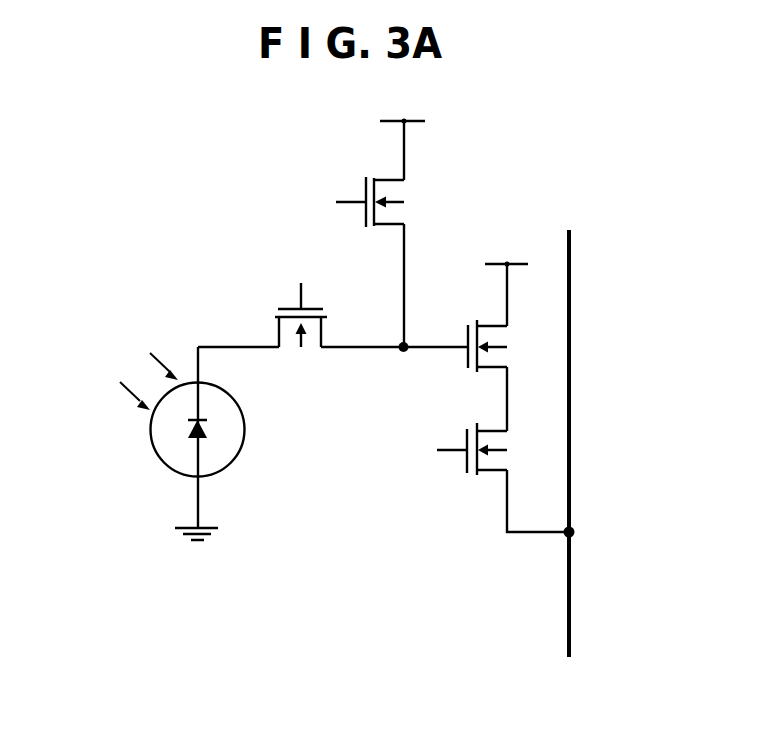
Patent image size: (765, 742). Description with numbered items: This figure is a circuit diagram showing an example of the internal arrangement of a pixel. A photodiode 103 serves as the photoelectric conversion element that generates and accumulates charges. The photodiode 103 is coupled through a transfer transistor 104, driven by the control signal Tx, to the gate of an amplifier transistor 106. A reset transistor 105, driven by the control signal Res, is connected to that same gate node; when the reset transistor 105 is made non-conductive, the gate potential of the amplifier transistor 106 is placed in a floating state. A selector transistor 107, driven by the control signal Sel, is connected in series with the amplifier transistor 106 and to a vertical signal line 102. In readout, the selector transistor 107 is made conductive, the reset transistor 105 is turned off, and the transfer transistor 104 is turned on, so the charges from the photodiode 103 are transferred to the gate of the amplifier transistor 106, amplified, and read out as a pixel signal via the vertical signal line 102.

The vertical signal line 102 is at (571, 627).
The photodiode 103 is at (152, 452).
The transfer transistor 104 is at (273, 310).
The reset transistor 105 is at (368, 175).
The amplifier transistor 106 is at (508, 359).
The selector transistor 107 is at (508, 462).